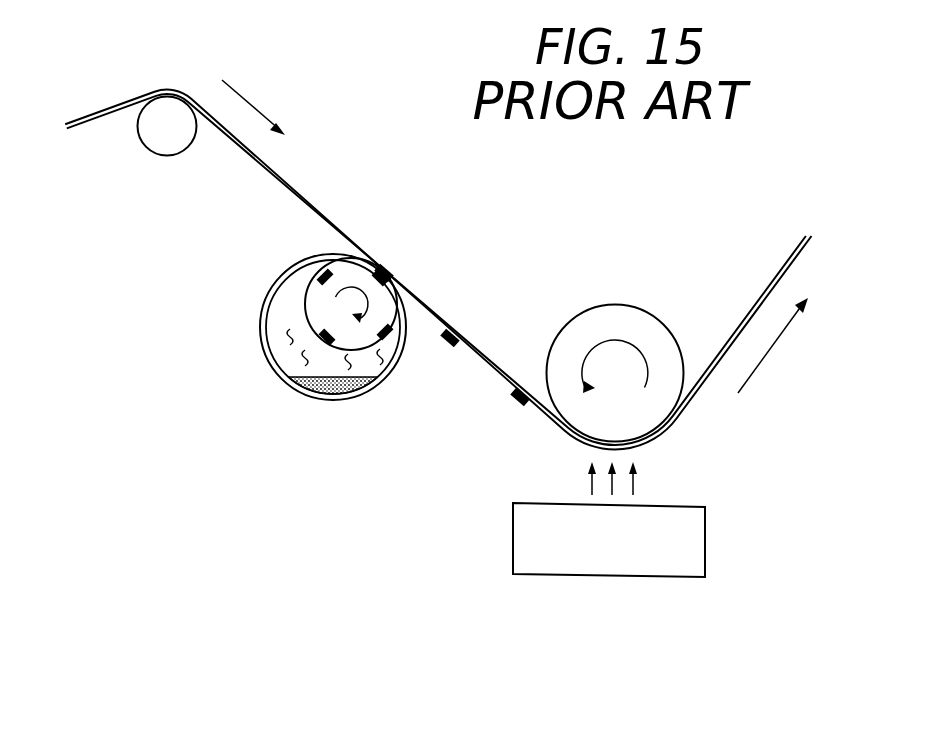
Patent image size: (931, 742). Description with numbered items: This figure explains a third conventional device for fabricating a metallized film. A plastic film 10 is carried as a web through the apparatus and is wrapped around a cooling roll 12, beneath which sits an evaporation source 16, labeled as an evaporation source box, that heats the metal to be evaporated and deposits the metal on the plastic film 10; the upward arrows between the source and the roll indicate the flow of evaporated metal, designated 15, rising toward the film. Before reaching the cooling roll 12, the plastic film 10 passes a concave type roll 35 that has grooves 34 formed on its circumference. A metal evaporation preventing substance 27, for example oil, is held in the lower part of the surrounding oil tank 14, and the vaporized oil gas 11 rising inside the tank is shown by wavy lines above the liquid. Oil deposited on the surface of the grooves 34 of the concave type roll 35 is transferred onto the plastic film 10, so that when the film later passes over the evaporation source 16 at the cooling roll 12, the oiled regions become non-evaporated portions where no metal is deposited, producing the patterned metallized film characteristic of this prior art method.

The plastic film 10 is at (117, 105).
The vaporized oil gas 11 is at (287, 337).
The cooling roll 12 is at (649, 314).
The oil tank 14 is at (270, 367).
The evaporated material flow 15 is at (645, 483).
The evaporation source 16 is at (707, 550).
The metal evaporation preventing substance 27 is at (310, 393).
The grooves 34 is at (383, 340).
The concave type roll 35 is at (313, 300).